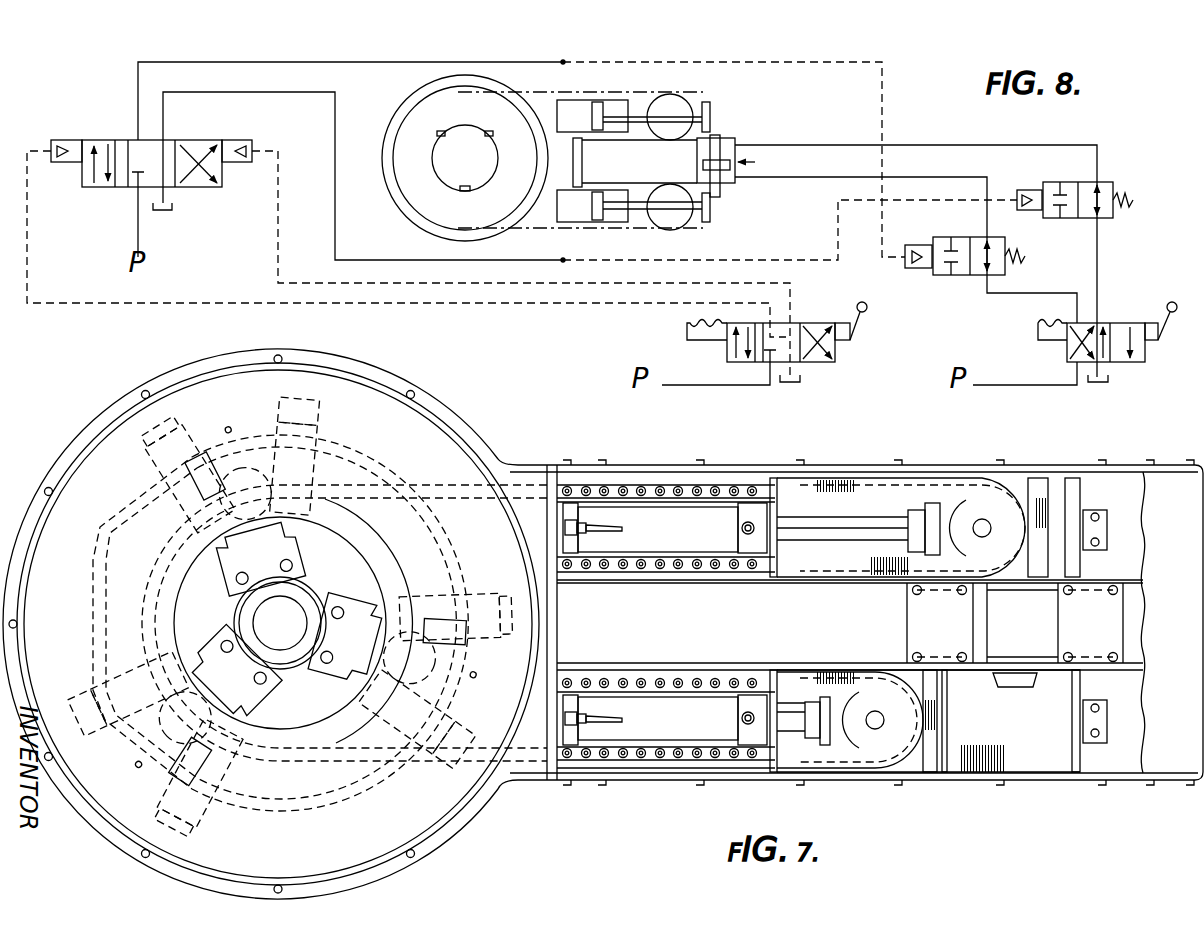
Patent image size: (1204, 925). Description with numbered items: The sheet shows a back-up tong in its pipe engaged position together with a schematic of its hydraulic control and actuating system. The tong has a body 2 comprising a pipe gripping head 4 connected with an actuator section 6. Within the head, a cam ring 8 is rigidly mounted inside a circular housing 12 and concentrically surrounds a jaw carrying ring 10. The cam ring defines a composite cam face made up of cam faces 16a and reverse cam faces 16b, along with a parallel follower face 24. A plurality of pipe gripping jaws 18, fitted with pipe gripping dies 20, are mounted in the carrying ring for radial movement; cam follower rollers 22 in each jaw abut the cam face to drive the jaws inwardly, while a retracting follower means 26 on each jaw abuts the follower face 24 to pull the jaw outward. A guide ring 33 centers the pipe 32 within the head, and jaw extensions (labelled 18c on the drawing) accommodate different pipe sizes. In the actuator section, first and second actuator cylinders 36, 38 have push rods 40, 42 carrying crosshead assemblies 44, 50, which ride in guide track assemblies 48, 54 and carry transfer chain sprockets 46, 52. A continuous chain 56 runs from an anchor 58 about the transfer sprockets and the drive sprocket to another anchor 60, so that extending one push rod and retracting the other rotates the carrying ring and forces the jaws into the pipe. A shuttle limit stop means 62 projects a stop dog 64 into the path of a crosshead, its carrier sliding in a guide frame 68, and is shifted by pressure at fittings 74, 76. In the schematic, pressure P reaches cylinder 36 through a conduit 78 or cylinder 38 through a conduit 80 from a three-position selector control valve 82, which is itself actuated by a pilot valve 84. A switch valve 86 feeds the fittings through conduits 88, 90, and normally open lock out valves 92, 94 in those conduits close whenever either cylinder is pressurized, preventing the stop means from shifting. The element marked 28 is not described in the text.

In FIG. 7, the body 2 is at (531, 457).
In FIG. 7, the pipe gripping head 4 is at (482, 420).
In FIG. 7, the actuator section 6 is at (830, 466).
In FIG. 7, the cam ring 8 is at (320, 460).
In FIG. 7, the jaw carrying ring 10 is at (148, 426).
In FIG. 7, the circular housing 12 is at (472, 810).
In FIG. 7, the cam faces 16a is at (150, 486).
In FIG. 7, the reverse cam faces 16b is at (365, 457).
In FIG. 7, the pipe gripping jaws 18 is at (204, 440).
In FIG. 7, the jaw 18c is at (215, 582).
In FIG. 7, the pipe gripping dies 20 is at (226, 606).
In FIG. 7, the cam follower rollers 22 is at (298, 432).
In FIG. 7, the follower face 24 is at (262, 410).
In FIG. 7, the retracting follower means 26 is at (232, 447).
In FIG. 7, the rack 28 is at (174, 502).
In FIG. 7, the pipe 32 is at (331, 578).
In FIG. 7, the guide ring 33 is at (361, 621).
In FIG. 8, the first actuator cylinder 36 is at (592, 100).
In FIG. 7, the first actuator cylinder 36 is at (700, 520).
In FIG. 8, the second actuator cylinder 38 is at (613, 223).
In FIG. 7, the second actuator cylinder 38 is at (665, 720).
In FIG. 8, the push rod 40 is at (640, 113).
In FIG. 7, the push rod 40 is at (838, 542).
In FIG. 8, the push rod 42 is at (637, 216).
In FIG. 7, the push rod 42 is at (792, 710).
In FIG. 8, the crosshead assembly 44 is at (712, 121).
In FIG. 7, the crosshead assembly 44 is at (940, 503).
In FIG. 8, the transfer chain sprocket 46 is at (684, 103).
In FIG. 7, the transfer chain sprocket 46 is at (970, 495).
In FIG. 7, the guide track assembly 48 is at (1040, 480).
In FIG. 8, the crosshead assembly 50 is at (708, 213).
In FIG. 7, the crosshead assembly 50 is at (857, 703).
In FIG. 8, the transfer chain sprocket 52 is at (676, 223).
In FIG. 7, the transfer chain sprocket 52 is at (861, 742).
In FIG. 7, the guide track assembly 54 is at (1040, 766).
In FIG. 8, the chain 56 is at (561, 226).
In FIG. 7, the chain 56 is at (648, 490).
In FIG. 7, the anchor 58 is at (575, 672).
In FIG. 7, the anchor 60 is at (580, 575).
In FIG. 8, the shuttle limit stop means 62 is at (767, 160).
In FIG. 7, the shuttle limit stop means 62 is at (1030, 637).
In FIG. 7, the stop dog 64 is at (1022, 690).
In FIG. 7, the guide frame 68 is at (1048, 618).
In FIG. 8, the fitting 74 is at (737, 143).
In FIG. 8, the fitting 76 is at (732, 177).
In FIG. 8, the conduit 78 is at (379, 64).
In FIG. 8, the conduit 80 is at (334, 107).
In FIG. 8, the selector control valve 82 is at (201, 188).
In FIG. 8, the pilot valve 84 is at (815, 363).
In FIG. 8, the switch valve 86 is at (1118, 363).
In FIG. 8, the conduit 88 is at (985, 145).
In FIG. 8, the conduit 90 is at (922, 178).
In FIG. 8, the lock out valve 92 is at (1110, 184).
In FIG. 8, the lock out valve 94 is at (962, 276).